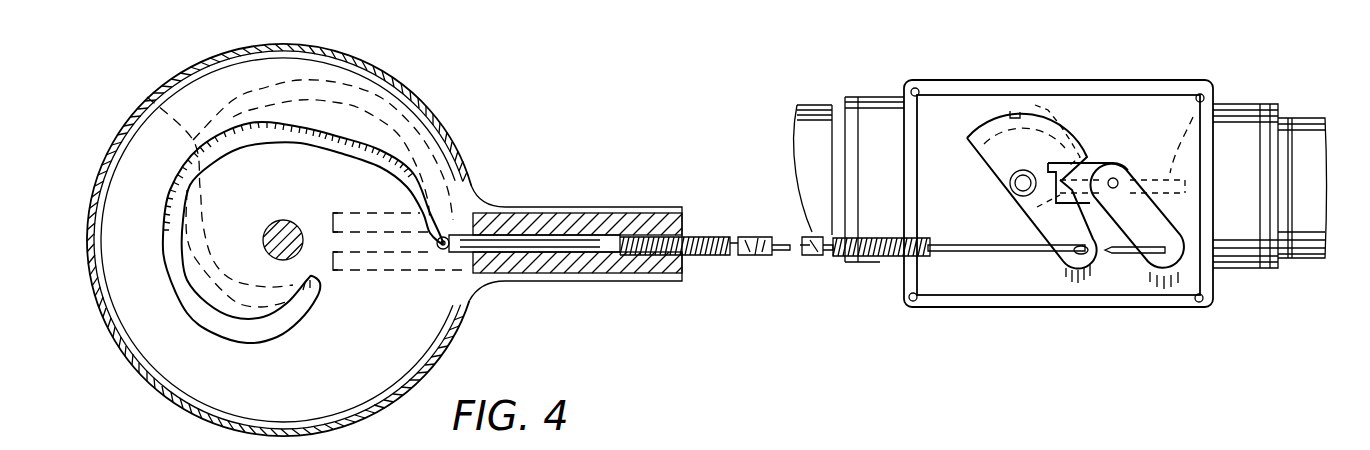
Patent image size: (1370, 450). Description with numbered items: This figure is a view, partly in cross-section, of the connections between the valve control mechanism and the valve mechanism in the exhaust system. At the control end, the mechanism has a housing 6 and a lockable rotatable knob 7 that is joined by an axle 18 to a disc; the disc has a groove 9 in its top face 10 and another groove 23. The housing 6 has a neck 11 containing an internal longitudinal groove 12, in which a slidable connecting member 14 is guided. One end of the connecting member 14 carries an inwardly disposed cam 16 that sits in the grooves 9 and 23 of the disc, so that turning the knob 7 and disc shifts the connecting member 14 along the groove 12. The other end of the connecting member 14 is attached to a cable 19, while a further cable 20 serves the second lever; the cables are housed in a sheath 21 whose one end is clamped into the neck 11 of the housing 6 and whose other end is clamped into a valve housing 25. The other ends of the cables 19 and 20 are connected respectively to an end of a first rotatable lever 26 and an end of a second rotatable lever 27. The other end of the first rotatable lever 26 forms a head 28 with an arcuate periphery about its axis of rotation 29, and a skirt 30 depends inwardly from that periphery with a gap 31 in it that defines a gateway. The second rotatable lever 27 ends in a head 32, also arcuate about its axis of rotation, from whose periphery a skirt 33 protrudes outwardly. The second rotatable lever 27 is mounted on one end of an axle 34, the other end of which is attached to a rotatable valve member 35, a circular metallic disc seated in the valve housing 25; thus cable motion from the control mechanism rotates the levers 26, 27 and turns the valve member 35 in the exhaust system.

The housing 6 is at (448, 127).
The lockable rotatable knob 7 is at (825, 287).
The groove 9 is at (178, 182).
The top face 10 is at (132, 272).
The neck 11 is at (605, 278).
The longitudinal groove 12 is at (563, 253).
The slidable connecting member 14 is at (517, 243).
The cam 16 is at (437, 253).
The axle 18 is at (300, 245).
The cable 19 is at (735, 258).
The cable 20 is at (1122, 253).
The sheath 21 is at (710, 257).
The groove 23 is at (147, 97).
The valve housing 25 is at (1043, 287).
The first rotatable lever 26 is at (1078, 262).
The second rotatable lever 27 is at (1167, 263).
The head 28 is at (1007, 140).
The axis of rotation 29 is at (1012, 181).
The skirt 30 is at (980, 123).
The gap 31 is at (1035, 105).
The head 32 is at (1095, 165).
The skirt 33 is at (1037, 207).
The axle 34 is at (1120, 176).
The rotatable valve member 35 is at (1193, 117).